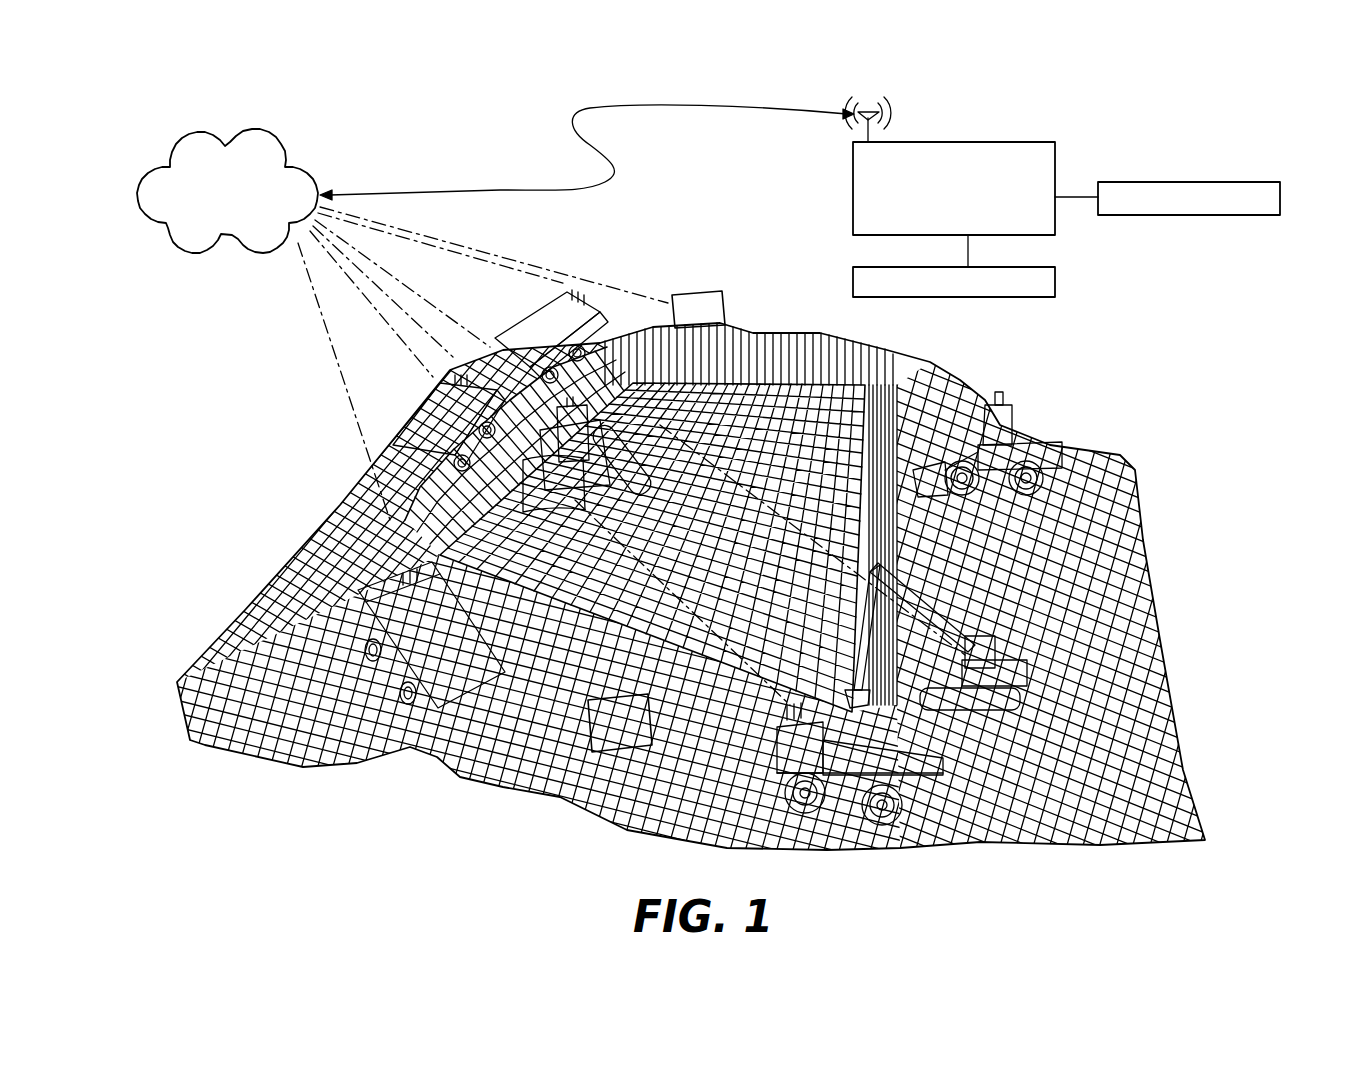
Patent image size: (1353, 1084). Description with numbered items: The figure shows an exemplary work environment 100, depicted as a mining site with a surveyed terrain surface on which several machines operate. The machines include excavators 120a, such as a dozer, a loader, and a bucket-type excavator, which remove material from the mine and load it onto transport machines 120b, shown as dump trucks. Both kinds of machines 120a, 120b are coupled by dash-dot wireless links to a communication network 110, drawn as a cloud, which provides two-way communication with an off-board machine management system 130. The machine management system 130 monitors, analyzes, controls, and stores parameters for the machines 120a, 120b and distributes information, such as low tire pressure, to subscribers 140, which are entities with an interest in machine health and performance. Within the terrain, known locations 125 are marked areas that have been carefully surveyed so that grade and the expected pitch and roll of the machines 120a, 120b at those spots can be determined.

The work environment 100 is at (211, 397).
The communication network 110 is at (292, 168).
The excavators 120a is at (645, 397).
The transport machines 120b is at (540, 333).
The known locations 125 is at (704, 290).
The machine management system 130 is at (1057, 150).
The subscribers 140 is at (1175, 183).